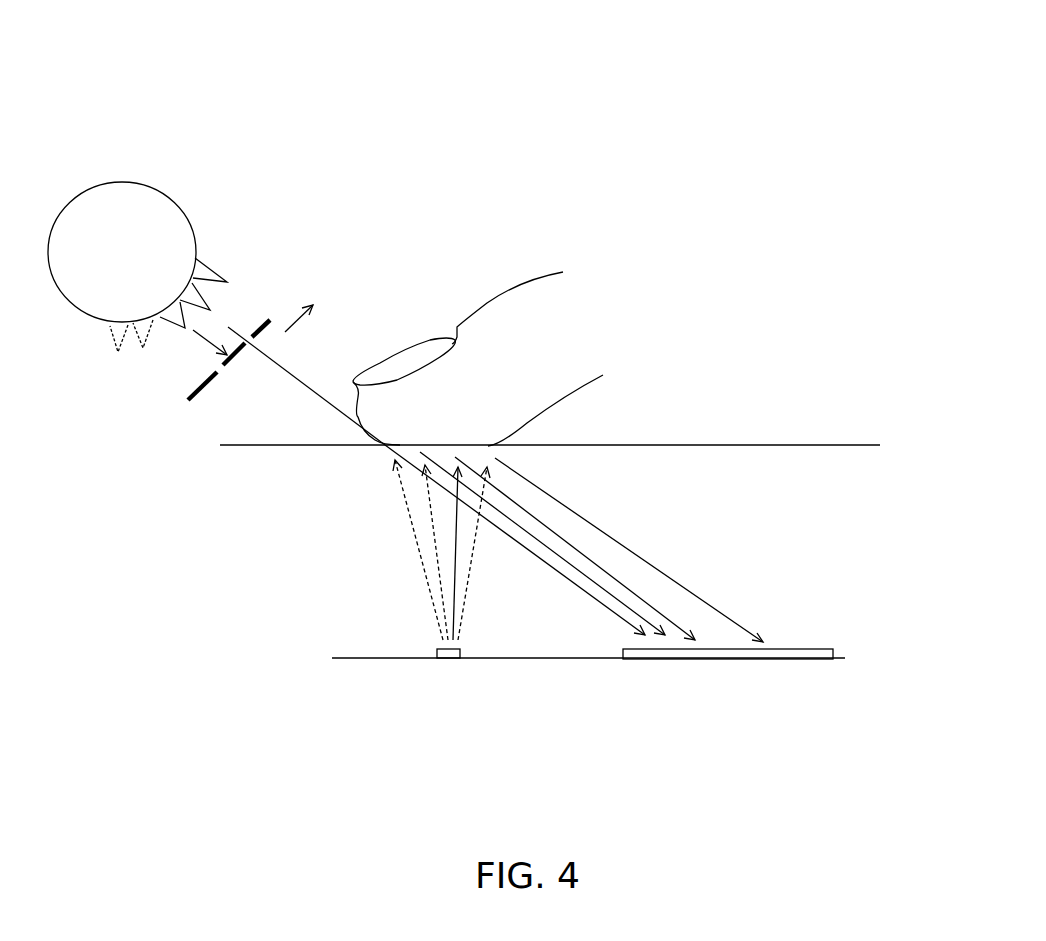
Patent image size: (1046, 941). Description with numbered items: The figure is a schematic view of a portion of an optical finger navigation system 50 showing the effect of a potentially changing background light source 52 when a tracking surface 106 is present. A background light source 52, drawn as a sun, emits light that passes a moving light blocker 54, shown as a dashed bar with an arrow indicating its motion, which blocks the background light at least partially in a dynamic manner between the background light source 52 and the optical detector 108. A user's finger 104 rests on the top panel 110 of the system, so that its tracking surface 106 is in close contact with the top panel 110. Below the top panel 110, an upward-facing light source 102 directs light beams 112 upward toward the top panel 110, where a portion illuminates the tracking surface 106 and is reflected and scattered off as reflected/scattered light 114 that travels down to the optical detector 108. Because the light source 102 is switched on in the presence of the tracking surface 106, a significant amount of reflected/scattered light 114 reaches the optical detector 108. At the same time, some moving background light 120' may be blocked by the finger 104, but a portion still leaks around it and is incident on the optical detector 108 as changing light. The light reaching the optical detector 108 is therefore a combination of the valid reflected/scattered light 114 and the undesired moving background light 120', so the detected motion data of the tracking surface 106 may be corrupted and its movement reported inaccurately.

The optical finger navigation (OFN) system 50 is at (595, 77).
The background light source 52 is at (147, 188).
The moving light blocker 54 is at (205, 392).
The light source 102 is at (432, 692).
The finger 104 is at (520, 278).
The tracking surface 106 is at (453, 445).
The optical detector 108 is at (700, 690).
The top panel 110 is at (700, 447).
The light beams 112 is at (417, 548).
The reflected/scattered light 114 is at (580, 518).
The moving background light 120' is at (609, 540).